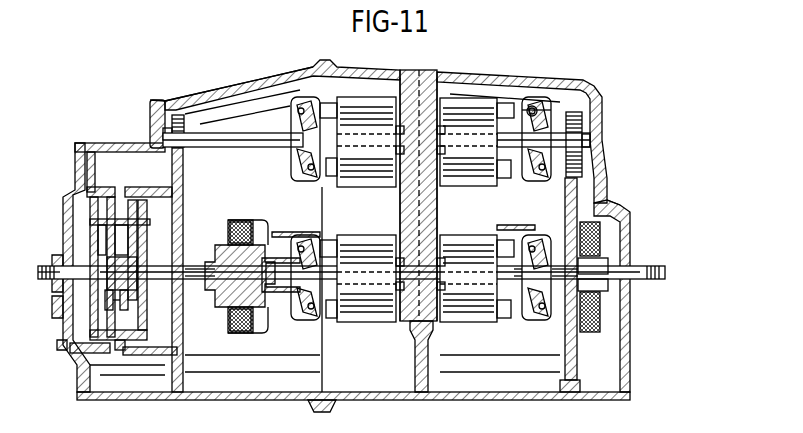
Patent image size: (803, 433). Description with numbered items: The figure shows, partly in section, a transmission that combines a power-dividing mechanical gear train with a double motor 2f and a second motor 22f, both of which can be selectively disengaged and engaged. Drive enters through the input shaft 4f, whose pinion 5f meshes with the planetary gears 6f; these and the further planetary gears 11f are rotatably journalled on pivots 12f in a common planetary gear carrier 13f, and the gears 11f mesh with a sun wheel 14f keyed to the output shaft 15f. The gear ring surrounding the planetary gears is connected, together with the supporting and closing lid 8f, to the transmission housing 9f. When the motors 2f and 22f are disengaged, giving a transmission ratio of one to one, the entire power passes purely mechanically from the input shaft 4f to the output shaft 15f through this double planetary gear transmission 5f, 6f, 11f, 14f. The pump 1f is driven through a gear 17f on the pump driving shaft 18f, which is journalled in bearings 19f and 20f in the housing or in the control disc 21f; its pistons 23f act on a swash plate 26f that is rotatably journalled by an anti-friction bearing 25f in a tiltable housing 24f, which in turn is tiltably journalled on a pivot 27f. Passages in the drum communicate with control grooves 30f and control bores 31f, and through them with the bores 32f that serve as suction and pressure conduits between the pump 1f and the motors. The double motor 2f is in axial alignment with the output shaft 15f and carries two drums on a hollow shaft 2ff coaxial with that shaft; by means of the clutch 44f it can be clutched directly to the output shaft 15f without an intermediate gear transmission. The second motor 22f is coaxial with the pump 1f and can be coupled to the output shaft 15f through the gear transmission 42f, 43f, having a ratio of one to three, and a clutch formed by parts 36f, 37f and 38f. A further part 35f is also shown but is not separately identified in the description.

The planetary gears 6f is at (74, 235).
The input shaft 4f is at (52, 268).
The supporting and closing lid 8f is at (60, 318).
The planetary gear carrier 13f is at (68, 345).
The planetary gears 11f is at (117, 200).
The bearing 19f is at (160, 130).
The transmission housing 9f is at (222, 88).
The pinion 5f is at (105, 288).
The sun wheel 14f is at (132, 297).
The pivot 12f is at (210, 218).
The gear 17f is at (178, 115).
The pump driving shaft 18f is at (258, 148).
The tiltable housing 24f is at (300, 108).
The pump unit 1f is at (360, 124).
The control disc 21f is at (486, 112).
The pistons 23f is at (333, 245).
The pivot 27f is at (493, 262).
The control grooves 30f is at (420, 76).
The bores 32f is at (430, 340).
The control bores 31f is at (445, 80).
The hollow shaft 2ff is at (272, 212).
The clutch 44f is at (235, 330).
The swash plate 26f is at (314, 232).
The double motor 2f is at (332, 326).
The output shaft 15f is at (205, 283).
The gear transmission 42f is at (582, 123).
The bearing 20f is at (592, 141).
The second motor 22f is at (523, 102).
The anti-friction bearing 25f is at (543, 102).
The shaft portion 35f is at (547, 258).
The clutch 36f is at (616, 206).
The clutch 37f is at (600, 238).
The clutch 38f is at (608, 264).
The gear transmission 43f is at (577, 350).